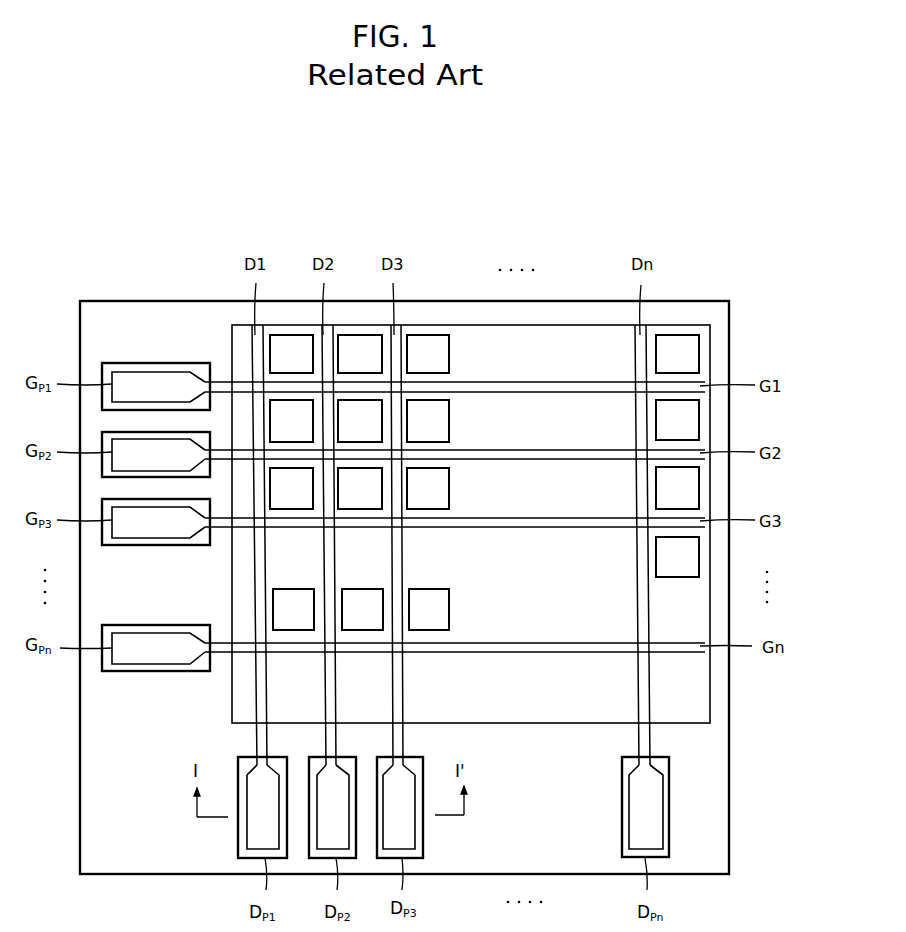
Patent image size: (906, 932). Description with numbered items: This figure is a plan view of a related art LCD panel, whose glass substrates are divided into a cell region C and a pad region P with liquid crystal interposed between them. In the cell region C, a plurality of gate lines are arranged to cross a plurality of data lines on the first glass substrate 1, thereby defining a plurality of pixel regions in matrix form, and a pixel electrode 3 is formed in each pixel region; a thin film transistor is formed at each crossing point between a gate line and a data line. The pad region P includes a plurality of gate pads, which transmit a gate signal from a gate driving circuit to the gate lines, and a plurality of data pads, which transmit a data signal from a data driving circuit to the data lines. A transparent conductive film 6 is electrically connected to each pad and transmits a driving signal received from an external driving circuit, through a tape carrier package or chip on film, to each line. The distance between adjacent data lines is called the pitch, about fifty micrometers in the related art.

The first glass substrate 1 is at (729, 810).
The pixel electrode 3 is at (438, 356).
The transparent conductive film 6 is at (157, 372).
The cell region C is at (710, 707).
The pad region P is at (729, 765).